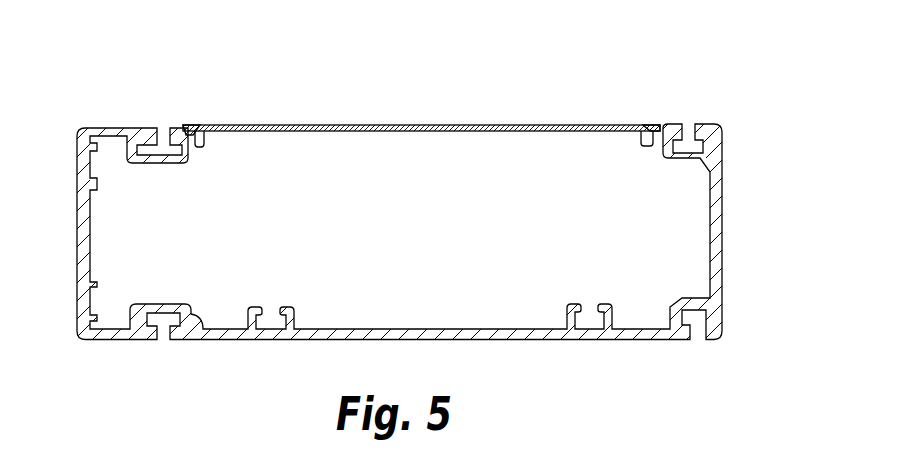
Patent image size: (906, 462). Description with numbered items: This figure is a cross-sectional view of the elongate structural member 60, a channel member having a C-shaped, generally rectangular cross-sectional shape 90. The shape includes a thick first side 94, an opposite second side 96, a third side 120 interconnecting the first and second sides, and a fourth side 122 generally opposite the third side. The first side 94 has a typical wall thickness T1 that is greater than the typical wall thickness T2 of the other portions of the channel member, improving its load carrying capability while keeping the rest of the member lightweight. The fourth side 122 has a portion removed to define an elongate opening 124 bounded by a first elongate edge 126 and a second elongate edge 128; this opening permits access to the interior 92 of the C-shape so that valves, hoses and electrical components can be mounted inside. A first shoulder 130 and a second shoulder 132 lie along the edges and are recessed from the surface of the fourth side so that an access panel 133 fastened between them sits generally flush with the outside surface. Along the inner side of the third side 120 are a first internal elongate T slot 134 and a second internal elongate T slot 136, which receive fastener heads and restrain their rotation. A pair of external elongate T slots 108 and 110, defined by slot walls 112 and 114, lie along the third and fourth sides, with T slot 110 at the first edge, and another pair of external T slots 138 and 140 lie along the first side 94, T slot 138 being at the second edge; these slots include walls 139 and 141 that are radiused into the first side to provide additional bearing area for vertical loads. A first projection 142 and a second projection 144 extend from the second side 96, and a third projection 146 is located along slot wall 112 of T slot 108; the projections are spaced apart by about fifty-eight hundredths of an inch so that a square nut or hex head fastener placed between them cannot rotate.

The elongate structural member 60 is at (80, 339).
The C-shaped cross-sectional shape 90 is at (722, 298).
The interior 92 is at (425, 225).
The first side 94 is at (725, 227).
The second side 96 is at (77, 222).
The external elongate T slot 108 is at (163, 322).
The external elongate T slot 110 is at (160, 150).
The slot wall 112 is at (200, 333).
The slot wall 114 is at (172, 143).
The third side 120 is at (335, 339).
The fourth side 122 is at (88, 126).
The elongate opening 124 is at (625, 133).
The first elongate edge 126 is at (205, 141).
The second elongate edge 128 is at (635, 146).
The first shoulder 130 is at (192, 130).
The second shoulder 132 is at (643, 128).
The access panel 133 is at (396, 124).
The first internal elongate T slot 134 is at (270, 313).
The second internal elongate T slot 136 is at (590, 312).
The external elongate T slot 138 is at (690, 128).
The wall 139 is at (714, 172).
The external elongate T slot 140 is at (697, 322).
The wall 141 is at (722, 287).
The first projection 142 is at (98, 314).
The second projection 144 is at (100, 325).
The third projection 146 is at (135, 303).
The wall thickness T1 is at (677, 205).
The wall thickness T2 is at (504, 372).